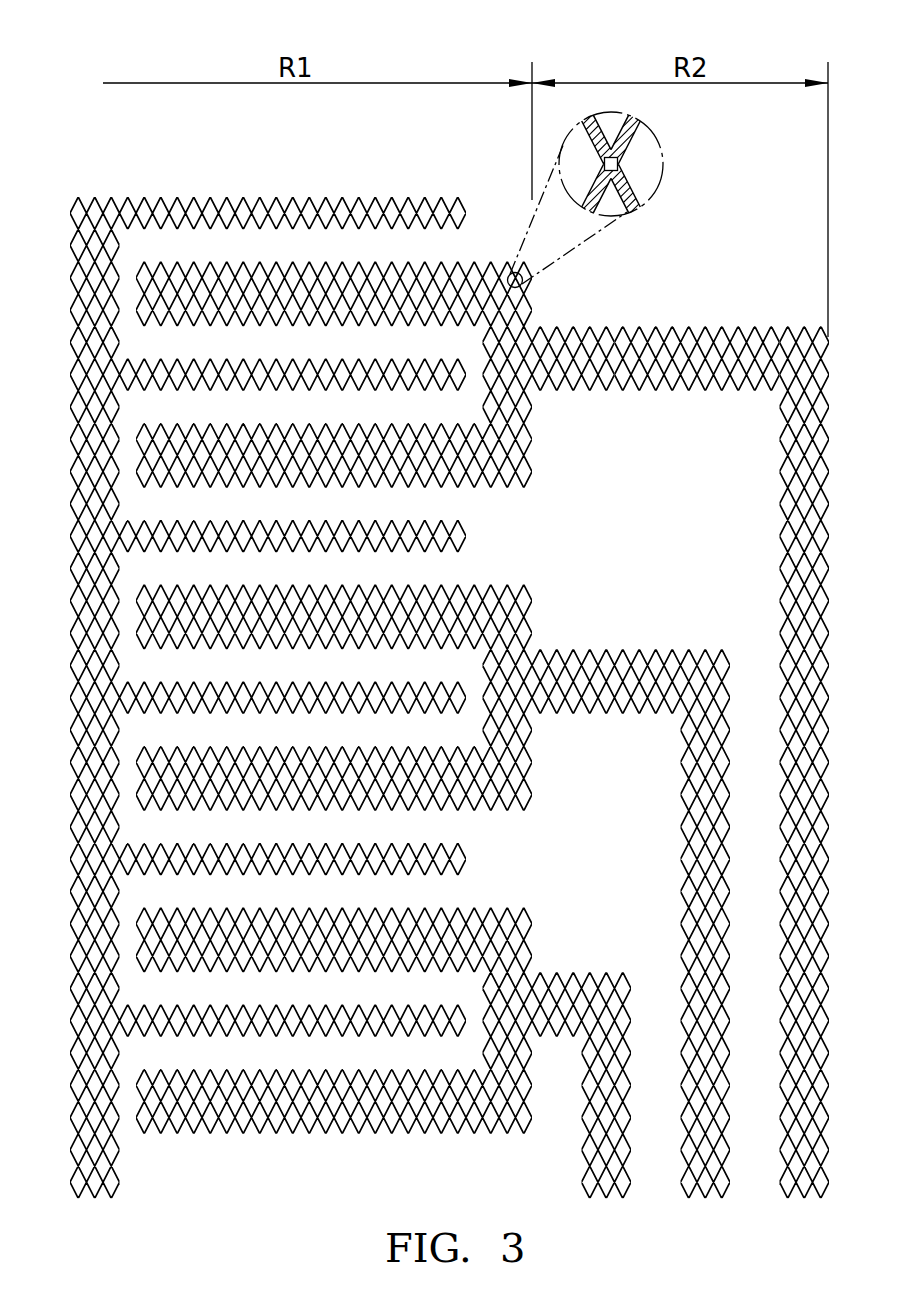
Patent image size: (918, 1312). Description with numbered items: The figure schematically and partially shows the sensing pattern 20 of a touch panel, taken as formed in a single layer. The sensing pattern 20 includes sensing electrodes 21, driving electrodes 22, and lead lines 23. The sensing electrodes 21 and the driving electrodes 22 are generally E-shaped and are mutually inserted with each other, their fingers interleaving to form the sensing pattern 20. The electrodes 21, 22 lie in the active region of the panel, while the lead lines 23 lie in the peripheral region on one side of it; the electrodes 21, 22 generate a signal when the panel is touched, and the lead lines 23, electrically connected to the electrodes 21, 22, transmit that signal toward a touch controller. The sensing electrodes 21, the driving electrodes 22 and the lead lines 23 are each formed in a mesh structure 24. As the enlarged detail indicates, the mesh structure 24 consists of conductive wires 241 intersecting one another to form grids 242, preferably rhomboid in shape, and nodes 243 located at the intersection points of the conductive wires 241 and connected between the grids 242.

The sensing pattern 20 is at (464, 37).
The sensing electrodes 21 is at (85, 181).
The driving electrodes 22 is at (500, 247).
The lead lines 23 is at (793, 312).
The mesh structure 24 is at (768, 270).
The conductive wires 241 is at (592, 328).
The grids 242 is at (667, 328).
The nodes 243 is at (728, 328).